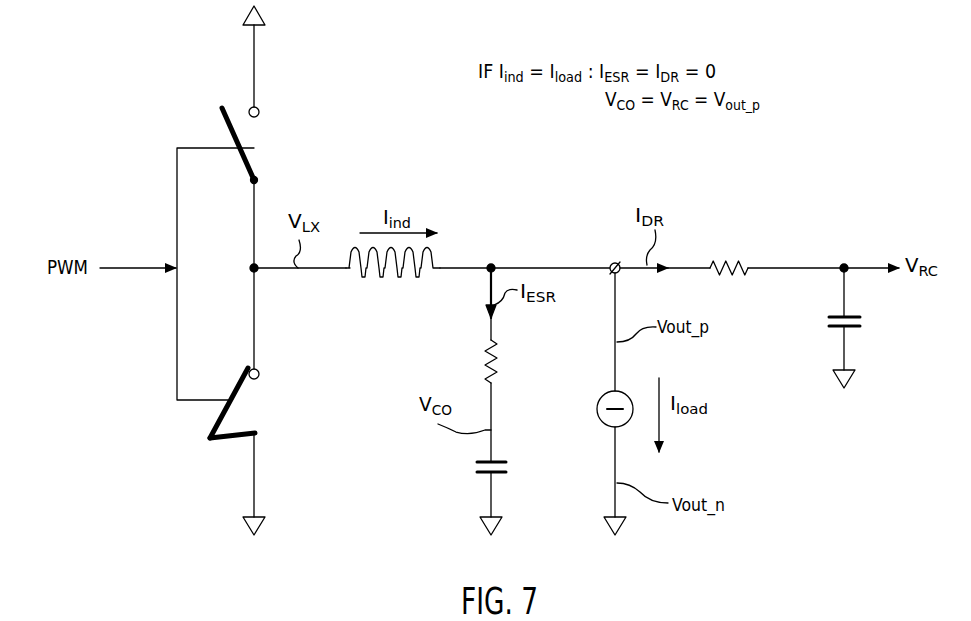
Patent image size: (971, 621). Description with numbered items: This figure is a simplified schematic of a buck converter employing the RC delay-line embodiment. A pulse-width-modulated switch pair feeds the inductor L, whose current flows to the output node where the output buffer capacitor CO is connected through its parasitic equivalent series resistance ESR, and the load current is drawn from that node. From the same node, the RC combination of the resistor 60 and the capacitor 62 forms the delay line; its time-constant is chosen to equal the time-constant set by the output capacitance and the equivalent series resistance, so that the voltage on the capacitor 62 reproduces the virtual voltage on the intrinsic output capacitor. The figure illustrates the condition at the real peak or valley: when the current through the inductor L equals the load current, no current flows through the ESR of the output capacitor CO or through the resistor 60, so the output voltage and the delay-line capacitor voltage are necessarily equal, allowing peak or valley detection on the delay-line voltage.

The resistor 60 is at (727, 258).
The capacitor 62 is at (853, 330).
The inductor L is at (378, 280).
The equivalent series resistance ESR is at (483, 362).
The output capacitor CO is at (476, 462).